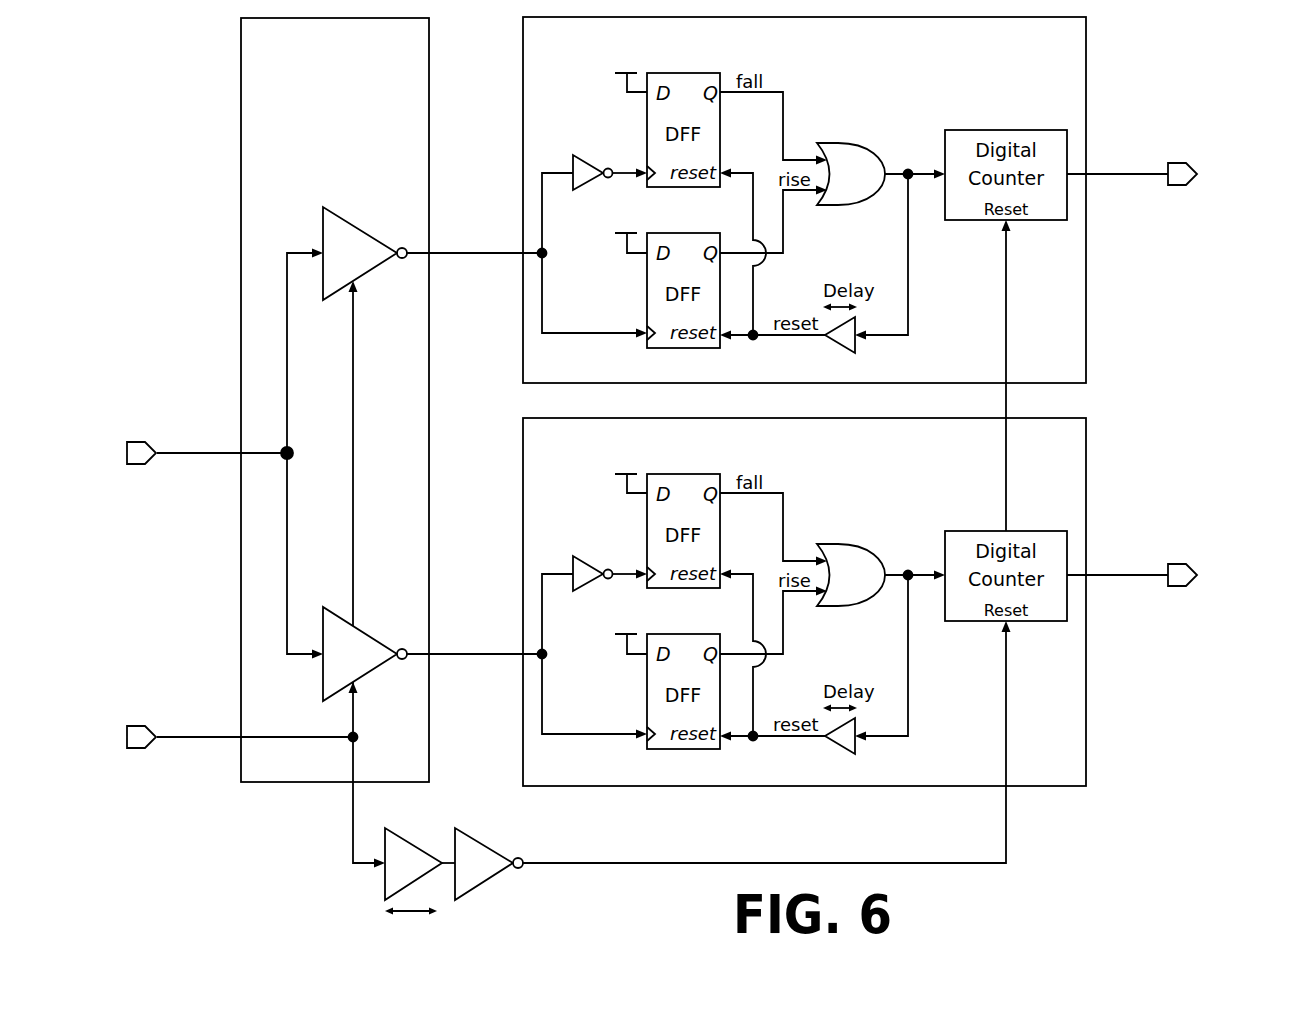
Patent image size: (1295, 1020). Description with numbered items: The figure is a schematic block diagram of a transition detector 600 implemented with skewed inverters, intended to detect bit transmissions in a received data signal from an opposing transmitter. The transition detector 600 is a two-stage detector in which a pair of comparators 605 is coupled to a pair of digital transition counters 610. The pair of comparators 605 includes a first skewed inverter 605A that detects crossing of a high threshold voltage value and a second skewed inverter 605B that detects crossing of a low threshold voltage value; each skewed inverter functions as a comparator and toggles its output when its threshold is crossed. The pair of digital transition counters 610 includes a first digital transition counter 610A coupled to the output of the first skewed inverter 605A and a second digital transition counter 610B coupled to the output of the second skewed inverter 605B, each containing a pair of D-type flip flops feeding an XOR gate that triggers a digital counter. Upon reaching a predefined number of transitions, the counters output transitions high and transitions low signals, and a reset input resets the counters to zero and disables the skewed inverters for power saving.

The transition detector 600 is at (95, 61).
The pair of comparators 605 is at (410, 53).
The first skewed inverter 605A is at (323, 213).
The second skewed inverter 605B is at (323, 629).
The pair of digital transition counters 610 is at (1120, 443).
The first digital transition counter 610A is at (942, 53).
The second digital transition counter 610B is at (942, 454).